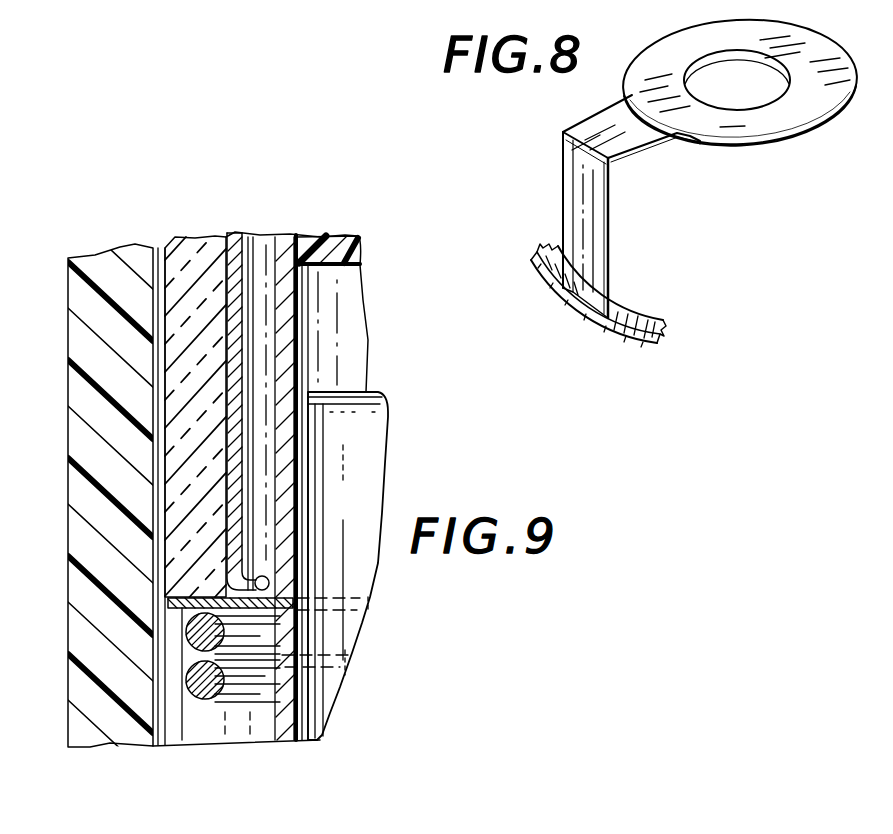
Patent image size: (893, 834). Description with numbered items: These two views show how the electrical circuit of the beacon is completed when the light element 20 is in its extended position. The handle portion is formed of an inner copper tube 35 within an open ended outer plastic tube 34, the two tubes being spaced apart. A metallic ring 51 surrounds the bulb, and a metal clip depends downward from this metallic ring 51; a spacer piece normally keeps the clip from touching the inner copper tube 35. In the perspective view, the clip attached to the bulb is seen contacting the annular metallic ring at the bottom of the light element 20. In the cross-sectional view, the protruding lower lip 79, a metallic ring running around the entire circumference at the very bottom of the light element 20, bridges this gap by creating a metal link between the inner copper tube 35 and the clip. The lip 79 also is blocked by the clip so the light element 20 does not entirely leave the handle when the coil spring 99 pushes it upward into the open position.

In FIG. 9, the light element 20 is at (193, 242).
In FIG. 9, the outer tube 34 is at (83, 437).
In FIG. 9, the inner tube 35 is at (283, 497).
In FIG. 8, the metallic ring 51 is at (802, 115).
In FIG. 9, the metallic ring 51 is at (236, 240).
In FIG. 8, the lower lip 79 is at (632, 342).
In FIG. 9, the lower lip 79 is at (170, 603).
In FIG. 9, the coil spring 99 is at (208, 690).